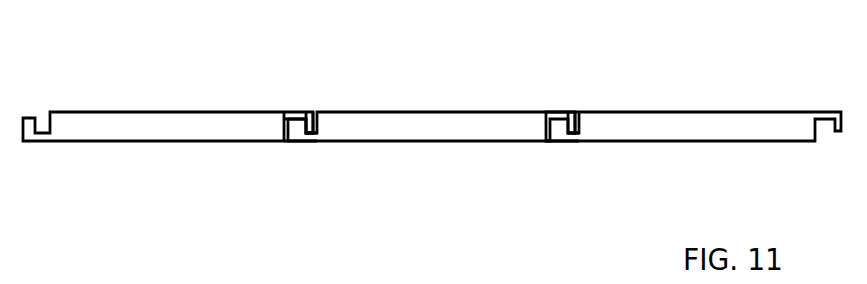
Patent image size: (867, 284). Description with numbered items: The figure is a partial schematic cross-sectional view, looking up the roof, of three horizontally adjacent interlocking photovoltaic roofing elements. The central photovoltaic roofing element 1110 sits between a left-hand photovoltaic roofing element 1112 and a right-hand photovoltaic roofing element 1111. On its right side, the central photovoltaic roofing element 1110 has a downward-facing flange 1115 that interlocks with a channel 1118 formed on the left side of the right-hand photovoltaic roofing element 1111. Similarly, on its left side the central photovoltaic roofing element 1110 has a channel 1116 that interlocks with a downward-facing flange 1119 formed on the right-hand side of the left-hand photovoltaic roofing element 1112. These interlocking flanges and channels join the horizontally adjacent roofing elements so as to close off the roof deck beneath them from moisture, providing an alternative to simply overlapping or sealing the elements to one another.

The central photovoltaic roofing element 1110 is at (430, 83).
The right-hand photovoltaic roofing element 1111 is at (688, 83).
The left-hand photovoltaic roofing element 1112 is at (162, 83).
The downward-facing flange 1115 is at (574, 127).
The channel 1116 is at (310, 148).
The channel 1118 is at (572, 149).
The downward-facing flange 1119 is at (308, 126).